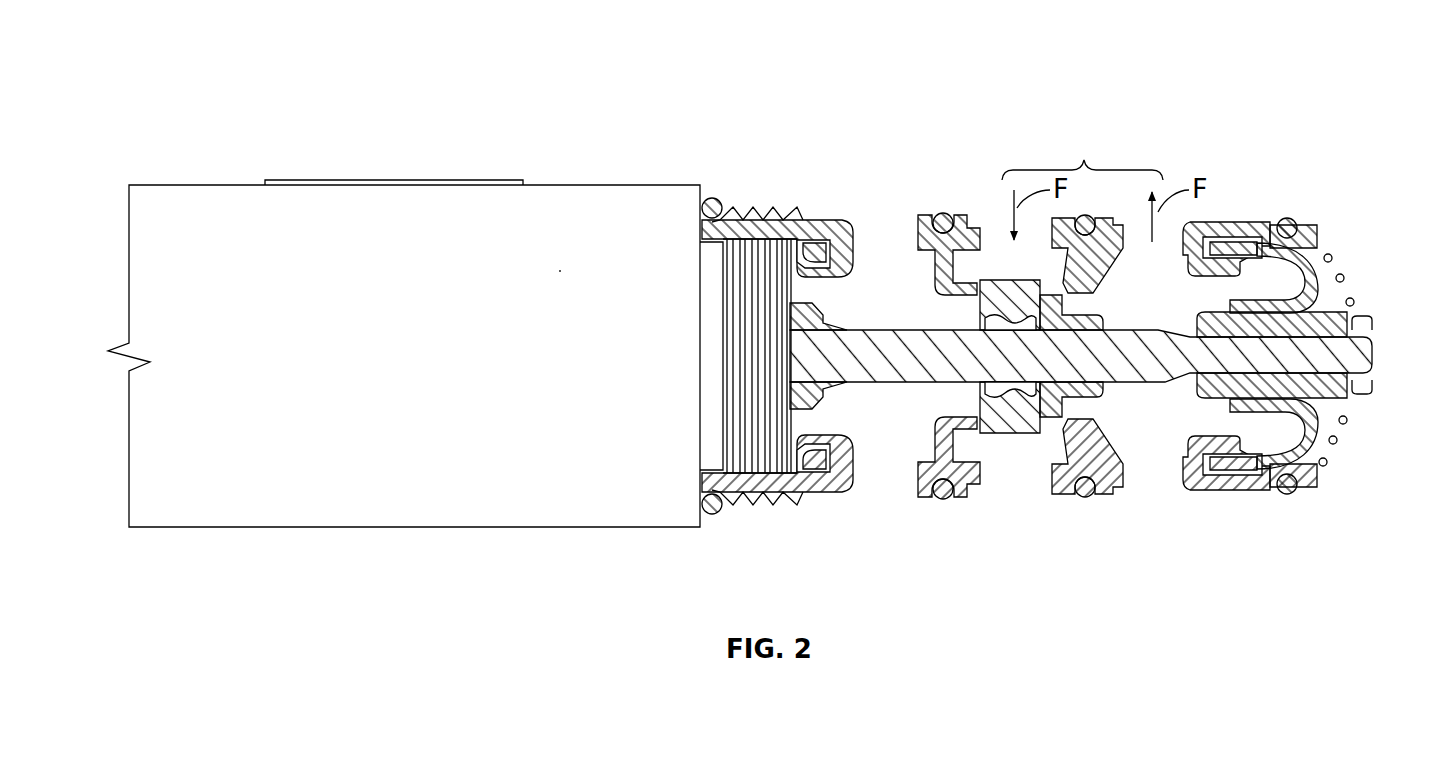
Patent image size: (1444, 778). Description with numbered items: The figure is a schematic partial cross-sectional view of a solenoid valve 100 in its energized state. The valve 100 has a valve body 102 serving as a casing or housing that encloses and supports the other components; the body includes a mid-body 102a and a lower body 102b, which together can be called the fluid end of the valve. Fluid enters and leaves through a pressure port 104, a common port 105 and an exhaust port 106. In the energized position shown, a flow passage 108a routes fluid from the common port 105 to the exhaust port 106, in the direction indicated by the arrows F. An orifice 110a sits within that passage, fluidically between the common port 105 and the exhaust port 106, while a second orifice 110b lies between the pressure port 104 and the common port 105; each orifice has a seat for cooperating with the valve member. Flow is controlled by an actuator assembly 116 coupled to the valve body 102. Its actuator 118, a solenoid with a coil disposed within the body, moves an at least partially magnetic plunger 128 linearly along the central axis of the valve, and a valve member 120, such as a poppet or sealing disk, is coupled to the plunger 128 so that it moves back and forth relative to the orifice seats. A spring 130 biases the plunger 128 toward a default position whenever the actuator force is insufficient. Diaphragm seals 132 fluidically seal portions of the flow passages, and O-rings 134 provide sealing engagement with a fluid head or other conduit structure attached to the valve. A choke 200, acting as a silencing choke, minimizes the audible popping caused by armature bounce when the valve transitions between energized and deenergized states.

The solenoid valve 100 is at (1340, 67).
The valve body 102 is at (200, 185).
The mid-body 102a is at (818, 218).
The lower body 102b is at (1242, 218).
The pressure port 104 is at (888, 495).
The common port 105 is at (1030, 495).
The exhaust port 106 is at (1273, 363).
The flow passage 108a is at (1084, 160).
The orifice 110a is at (1016, 372).
The orifice 110b is at (958, 290).
The actuator assembly 116 is at (408, 180).
The actuator 118 is at (548, 290).
The valve member 120 is at (1017, 435).
The plunger 128 is at (868, 330).
The spring 130 is at (1347, 280).
The diaphragm seal 132 is at (1310, 272).
The O-ring 134 is at (722, 200).
The choke 200 is at (1102, 392).